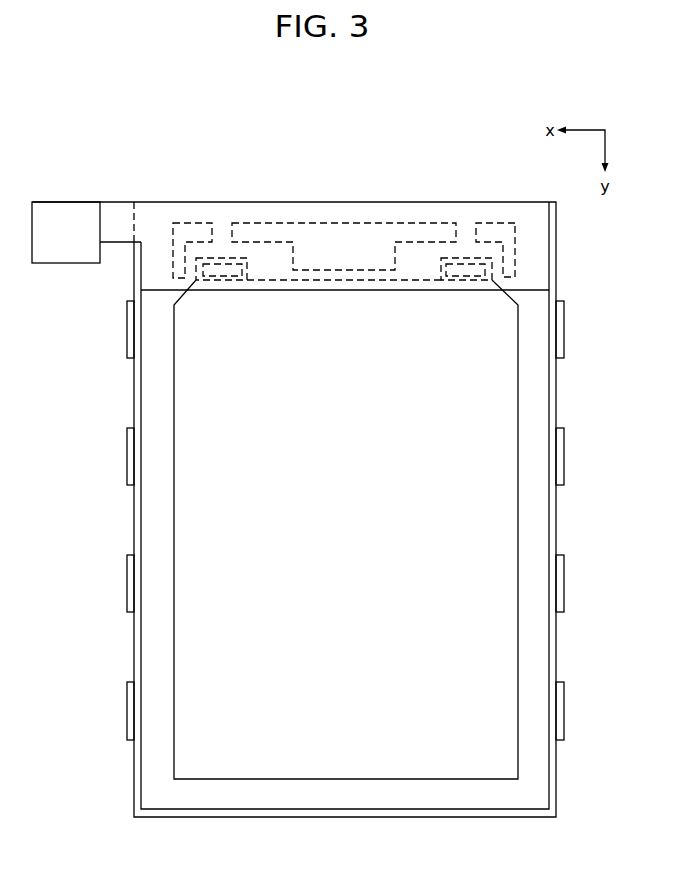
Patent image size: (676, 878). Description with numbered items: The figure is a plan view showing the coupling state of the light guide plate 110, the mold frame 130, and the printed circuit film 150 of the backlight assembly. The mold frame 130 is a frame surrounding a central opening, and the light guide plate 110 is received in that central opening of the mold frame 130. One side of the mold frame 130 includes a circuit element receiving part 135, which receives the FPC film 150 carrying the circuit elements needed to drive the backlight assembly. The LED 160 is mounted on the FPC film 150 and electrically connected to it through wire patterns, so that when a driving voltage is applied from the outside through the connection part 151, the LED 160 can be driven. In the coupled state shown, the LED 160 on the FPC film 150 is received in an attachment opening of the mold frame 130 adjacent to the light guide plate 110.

The light guide plate 110 is at (202, 523).
The mold frame 130 is at (134, 392).
The circuit element receiving part 135 is at (493, 228).
The printed circuit film 150 is at (117, 208).
The connection part 151 is at (63, 209).
The light source 160 is at (221, 272).